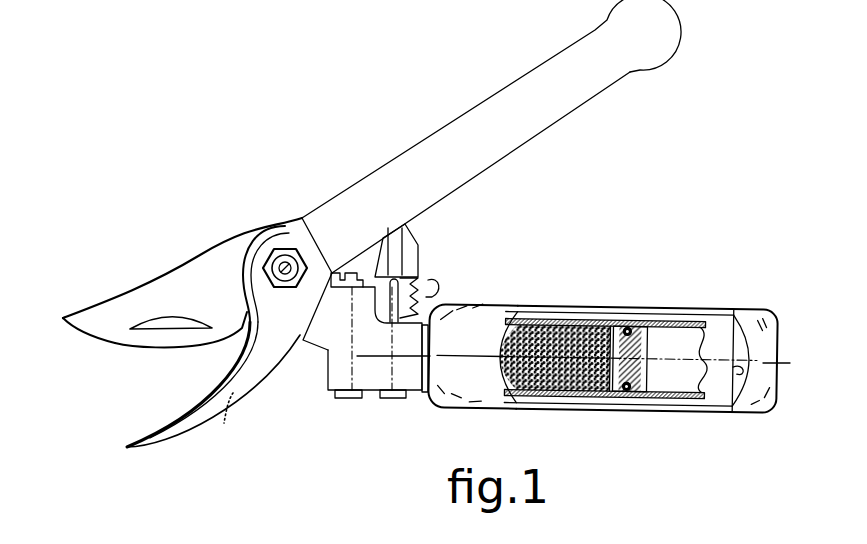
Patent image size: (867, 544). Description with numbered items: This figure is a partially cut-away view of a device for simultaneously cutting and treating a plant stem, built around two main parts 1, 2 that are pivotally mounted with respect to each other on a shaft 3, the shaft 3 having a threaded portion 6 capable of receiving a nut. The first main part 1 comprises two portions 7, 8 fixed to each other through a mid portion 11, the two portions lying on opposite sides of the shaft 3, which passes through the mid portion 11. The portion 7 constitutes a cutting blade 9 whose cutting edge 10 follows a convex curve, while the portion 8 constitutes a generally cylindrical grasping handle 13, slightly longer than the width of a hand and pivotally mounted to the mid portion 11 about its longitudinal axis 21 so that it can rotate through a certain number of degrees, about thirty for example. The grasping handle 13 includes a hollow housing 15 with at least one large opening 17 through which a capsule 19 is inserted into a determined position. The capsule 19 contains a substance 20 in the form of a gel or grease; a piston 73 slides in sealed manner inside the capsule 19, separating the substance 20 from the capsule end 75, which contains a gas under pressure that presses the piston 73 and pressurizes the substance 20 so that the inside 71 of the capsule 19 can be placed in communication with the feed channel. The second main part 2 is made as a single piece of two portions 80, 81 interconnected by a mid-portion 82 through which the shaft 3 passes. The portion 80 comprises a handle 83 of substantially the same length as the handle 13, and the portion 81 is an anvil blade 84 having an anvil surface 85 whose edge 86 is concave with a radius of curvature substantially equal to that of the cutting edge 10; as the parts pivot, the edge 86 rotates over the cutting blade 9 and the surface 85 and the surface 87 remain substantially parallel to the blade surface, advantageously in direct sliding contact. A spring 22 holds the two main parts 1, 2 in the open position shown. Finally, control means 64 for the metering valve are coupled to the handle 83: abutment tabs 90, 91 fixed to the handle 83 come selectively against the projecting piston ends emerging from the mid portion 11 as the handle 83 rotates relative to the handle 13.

The first main part 1 is at (609, 349).
The second main part 2 is at (355, 192).
The shaft 3 is at (283, 262).
The threaded portion 6 is at (290, 289).
The cutting blade portion 7 is at (165, 296).
The grasping handle portion 8 is at (662, 300).
The cutting blade 9 is at (83, 330).
The cutting edge 10 is at (123, 346).
The mid portion 11 is at (398, 311).
The grasping handle 13 is at (650, 410).
The hollow housing 15 is at (711, 396).
The large opening 17 is at (745, 398).
The capsule 19 is at (557, 396).
The substance 20 is at (556, 345).
The longitudinal axis 21 is at (787, 365).
The spring 22 is at (432, 300).
The control means 64 is at (410, 244).
The inside of the capsule 71 is at (606, 340).
The piston 73 is at (604, 393).
The capsule end 75 is at (686, 324).
The handle portion 80 is at (527, 66).
The anvil blade portion 81 is at (206, 375).
The mid-portion 82 is at (264, 248).
The handle 83 is at (535, 112).
The anvil blade 84 is at (253, 370).
The anvil surface 85 is at (240, 347).
The anvil edge 86 is at (183, 422).
The anvil blade surface 87 is at (229, 421).
The abutment tab 90 is at (350, 270).
The abutment tab 91 is at (393, 258).